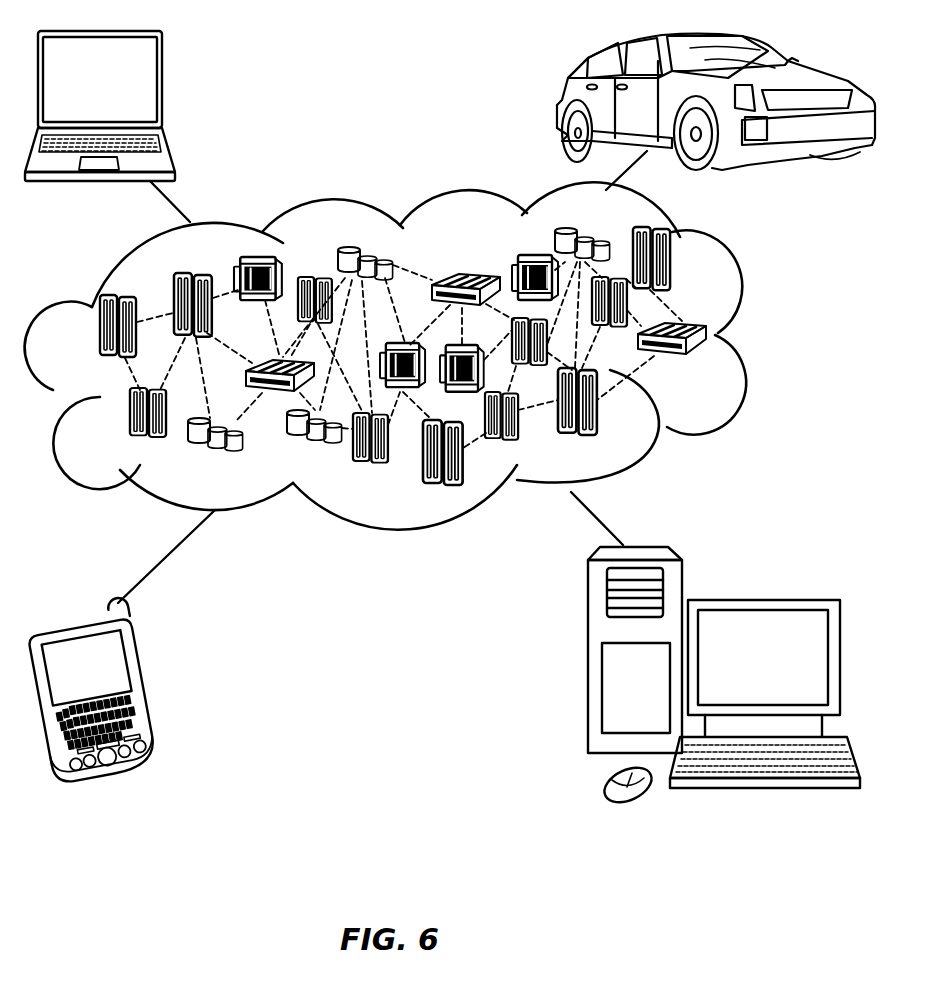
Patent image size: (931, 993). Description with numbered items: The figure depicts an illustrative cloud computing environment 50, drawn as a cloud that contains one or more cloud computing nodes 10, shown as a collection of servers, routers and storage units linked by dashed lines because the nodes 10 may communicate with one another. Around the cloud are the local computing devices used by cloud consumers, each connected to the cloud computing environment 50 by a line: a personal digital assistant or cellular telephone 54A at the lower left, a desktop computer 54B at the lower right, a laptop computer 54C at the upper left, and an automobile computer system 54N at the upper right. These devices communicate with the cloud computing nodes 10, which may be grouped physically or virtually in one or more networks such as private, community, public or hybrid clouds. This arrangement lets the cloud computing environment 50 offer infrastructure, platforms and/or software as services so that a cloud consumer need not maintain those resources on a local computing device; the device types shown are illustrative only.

The cloud computing node 10 is at (716, 364).
The cloud computing environment 50 is at (422, 355).
The personal digital assistant or cellular telephone 54A is at (150, 683).
The desktop computer 54B is at (762, 600).
The laptop computer 54C is at (162, 88).
The automobile computer system 54N is at (561, 100).